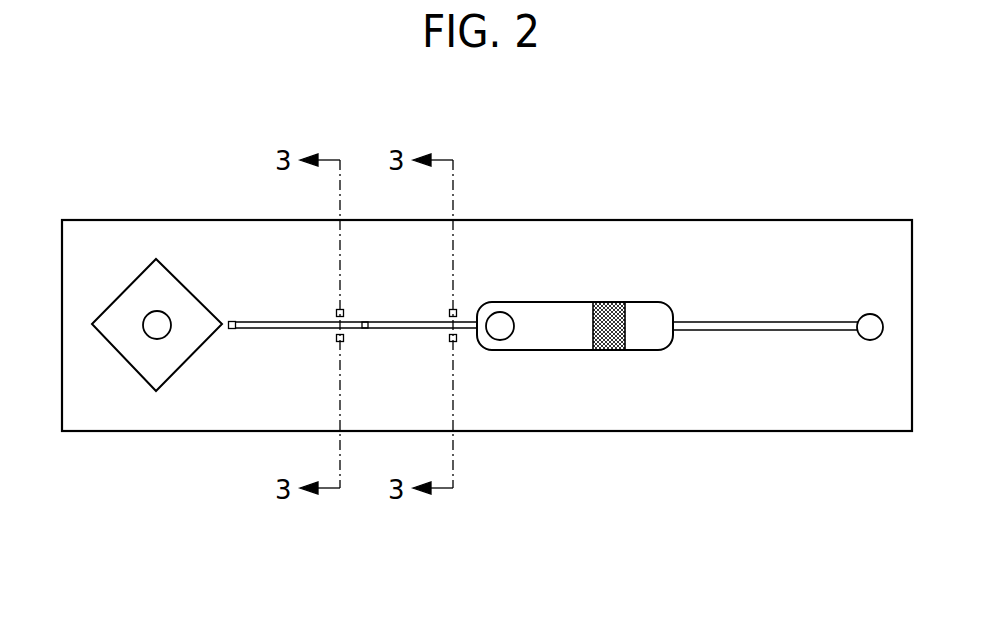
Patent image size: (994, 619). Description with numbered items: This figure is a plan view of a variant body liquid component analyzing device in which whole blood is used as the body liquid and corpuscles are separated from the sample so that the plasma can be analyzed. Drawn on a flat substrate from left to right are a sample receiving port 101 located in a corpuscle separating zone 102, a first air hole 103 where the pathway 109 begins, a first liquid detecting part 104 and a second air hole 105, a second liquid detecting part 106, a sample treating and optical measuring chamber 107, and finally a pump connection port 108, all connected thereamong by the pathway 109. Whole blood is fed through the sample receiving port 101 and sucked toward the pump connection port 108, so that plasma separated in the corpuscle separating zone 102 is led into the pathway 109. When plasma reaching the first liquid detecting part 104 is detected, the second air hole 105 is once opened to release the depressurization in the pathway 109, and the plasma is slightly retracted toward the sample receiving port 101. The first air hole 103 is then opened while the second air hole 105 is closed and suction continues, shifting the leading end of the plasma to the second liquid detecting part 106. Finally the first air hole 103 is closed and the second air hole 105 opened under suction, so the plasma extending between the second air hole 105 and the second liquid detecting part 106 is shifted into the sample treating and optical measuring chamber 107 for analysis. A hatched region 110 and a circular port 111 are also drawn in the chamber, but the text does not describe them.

The sample receiving port 101 is at (163, 327).
The corpuscle separating zone 102 is at (140, 367).
The first air hole 103 is at (232, 332).
The first liquid detecting part 104 is at (337, 308).
The second air hole 105 is at (367, 329).
The second liquid detecting part 106 is at (455, 309).
The sample treating and optical measuring chamber 107 is at (572, 338).
The pump connection port 108 is at (870, 315).
The pathway 109 is at (745, 329).
The filter 110 is at (622, 303).
The chamber port 111 is at (502, 336).